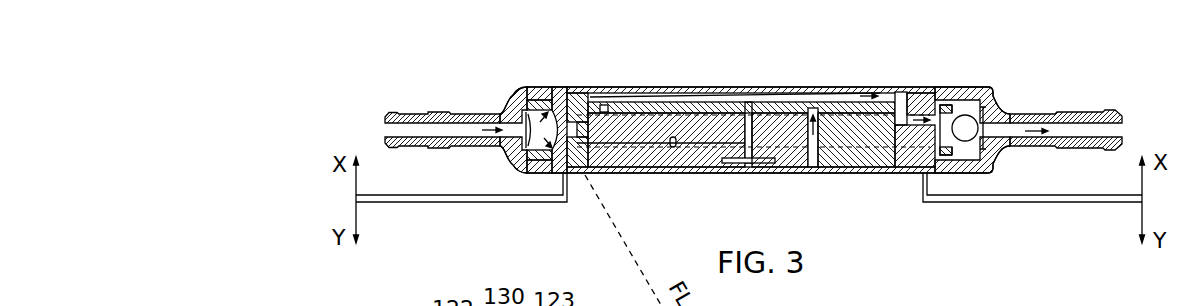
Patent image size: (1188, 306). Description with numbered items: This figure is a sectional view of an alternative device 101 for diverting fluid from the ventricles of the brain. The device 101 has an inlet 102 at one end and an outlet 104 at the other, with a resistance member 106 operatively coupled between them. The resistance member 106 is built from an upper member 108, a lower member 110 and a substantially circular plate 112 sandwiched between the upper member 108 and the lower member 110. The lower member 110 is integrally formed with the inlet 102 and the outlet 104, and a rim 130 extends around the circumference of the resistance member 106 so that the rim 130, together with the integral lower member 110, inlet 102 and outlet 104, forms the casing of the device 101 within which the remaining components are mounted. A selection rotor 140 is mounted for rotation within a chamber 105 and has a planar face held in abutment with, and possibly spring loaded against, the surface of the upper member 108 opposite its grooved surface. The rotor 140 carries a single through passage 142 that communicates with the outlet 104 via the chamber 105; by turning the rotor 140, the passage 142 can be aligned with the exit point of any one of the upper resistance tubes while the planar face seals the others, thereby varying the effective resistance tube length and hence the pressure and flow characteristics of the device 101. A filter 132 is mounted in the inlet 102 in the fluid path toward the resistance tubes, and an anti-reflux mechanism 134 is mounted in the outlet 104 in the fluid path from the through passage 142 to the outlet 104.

The device for diverting fluid 101 is at (328, 90).
The inlet 102 is at (409, 128).
The outlet 104 is at (1068, 130).
The chamber 105 is at (912, 88).
The resistance member 106 is at (667, 190).
The upper member 108 is at (892, 97).
The lower member 110 is at (874, 173).
The substantially circular plate 112 is at (823, 172).
The rim 130 is at (551, 92).
The filter 132 is at (512, 98).
The anti-reflux mechanism 134 is at (1002, 74).
The selection rotor 140 is at (712, 102).
The through passage 142 is at (810, 108).